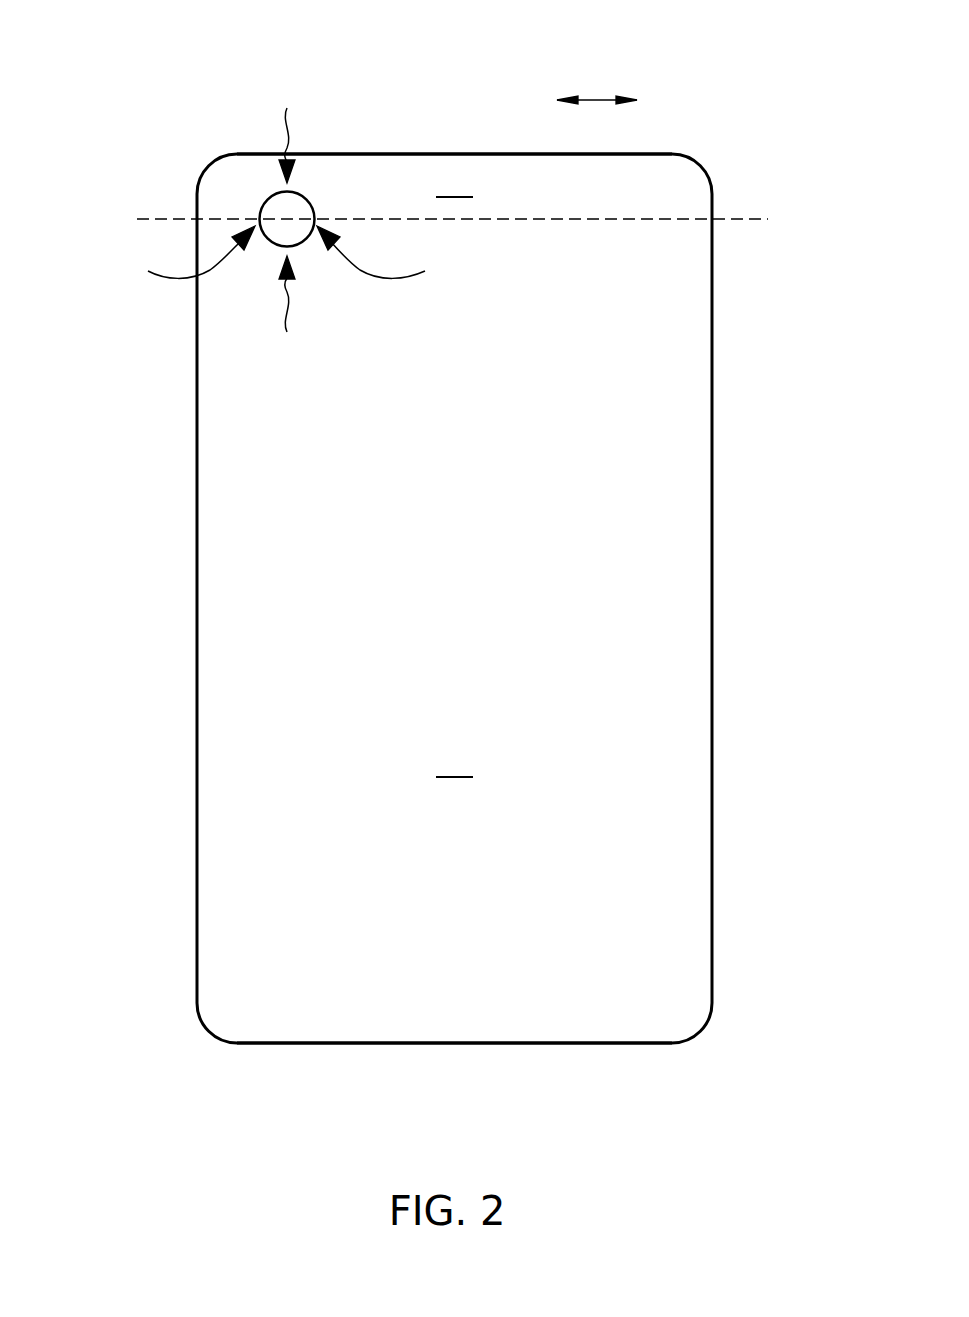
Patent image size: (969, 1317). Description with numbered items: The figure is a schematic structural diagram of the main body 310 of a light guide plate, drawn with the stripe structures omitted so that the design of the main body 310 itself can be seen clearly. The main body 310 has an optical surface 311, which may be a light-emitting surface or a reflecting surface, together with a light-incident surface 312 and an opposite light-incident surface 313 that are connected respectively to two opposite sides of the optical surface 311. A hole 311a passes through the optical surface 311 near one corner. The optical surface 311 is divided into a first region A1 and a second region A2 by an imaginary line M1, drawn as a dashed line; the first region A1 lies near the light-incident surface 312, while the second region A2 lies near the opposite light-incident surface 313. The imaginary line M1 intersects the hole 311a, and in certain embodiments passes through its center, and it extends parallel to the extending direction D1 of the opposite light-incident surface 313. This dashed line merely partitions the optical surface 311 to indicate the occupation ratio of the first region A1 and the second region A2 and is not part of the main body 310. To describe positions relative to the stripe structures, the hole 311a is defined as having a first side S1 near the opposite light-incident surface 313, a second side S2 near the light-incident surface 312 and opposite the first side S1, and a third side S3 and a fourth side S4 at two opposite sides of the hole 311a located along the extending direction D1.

The main body 310 is at (83, 35).
The optical surface 311 is at (650, 826).
The hole 311a is at (274, 213).
The light-incident surface 312 is at (424, 1046).
The opposite light-incident surface 313 is at (440, 153).
The first region A1 is at (454, 763).
The second region A2 is at (454, 183).
The imaginary line M1 is at (731, 216).
The extending direction D1 is at (617, 93).
The first side S1 is at (283, 130).
The second side S2 is at (283, 310).
The third side S3 is at (181, 255).
The fourth side S4 is at (391, 257).